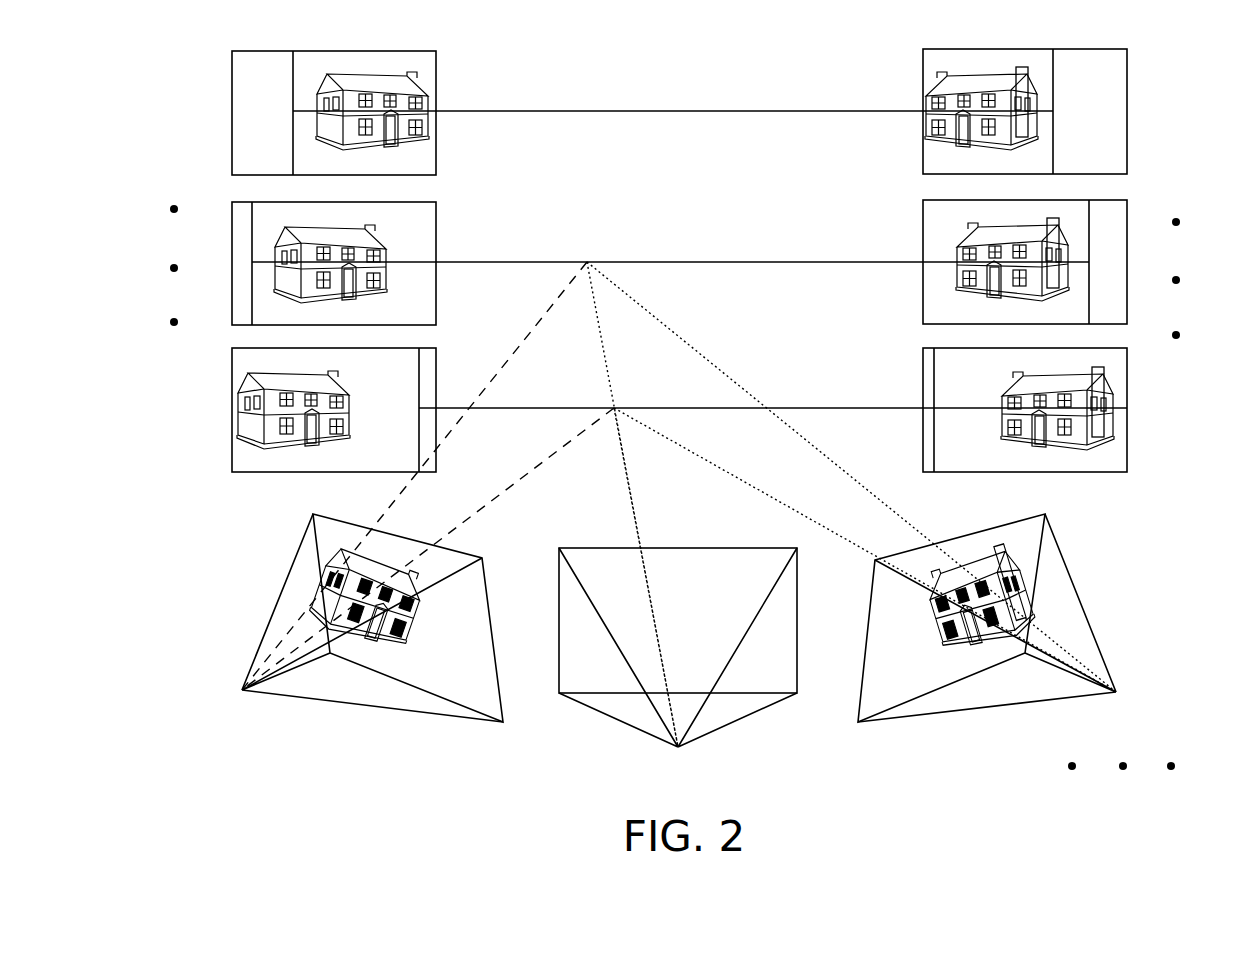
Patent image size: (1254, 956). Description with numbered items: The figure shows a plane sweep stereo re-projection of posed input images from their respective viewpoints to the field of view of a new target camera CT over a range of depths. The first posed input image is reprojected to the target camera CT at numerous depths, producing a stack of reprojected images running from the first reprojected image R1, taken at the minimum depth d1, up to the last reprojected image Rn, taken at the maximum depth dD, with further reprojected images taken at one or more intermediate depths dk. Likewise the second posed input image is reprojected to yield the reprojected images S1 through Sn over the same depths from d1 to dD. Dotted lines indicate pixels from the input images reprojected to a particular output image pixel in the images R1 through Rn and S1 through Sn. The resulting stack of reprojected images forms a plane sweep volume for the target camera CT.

The reprojected image Rn is at (302, 113).
The reprojected image R1 is at (302, 410).
The maximum depth dD is at (673, 100).
The intermediate depth dk is at (670, 250).
The minimum depth d1 is at (773, 395).
The reprojected image Sn is at (1054, 111).
The reprojected image S1 is at (1054, 410).
The target camera CT is at (678, 670).